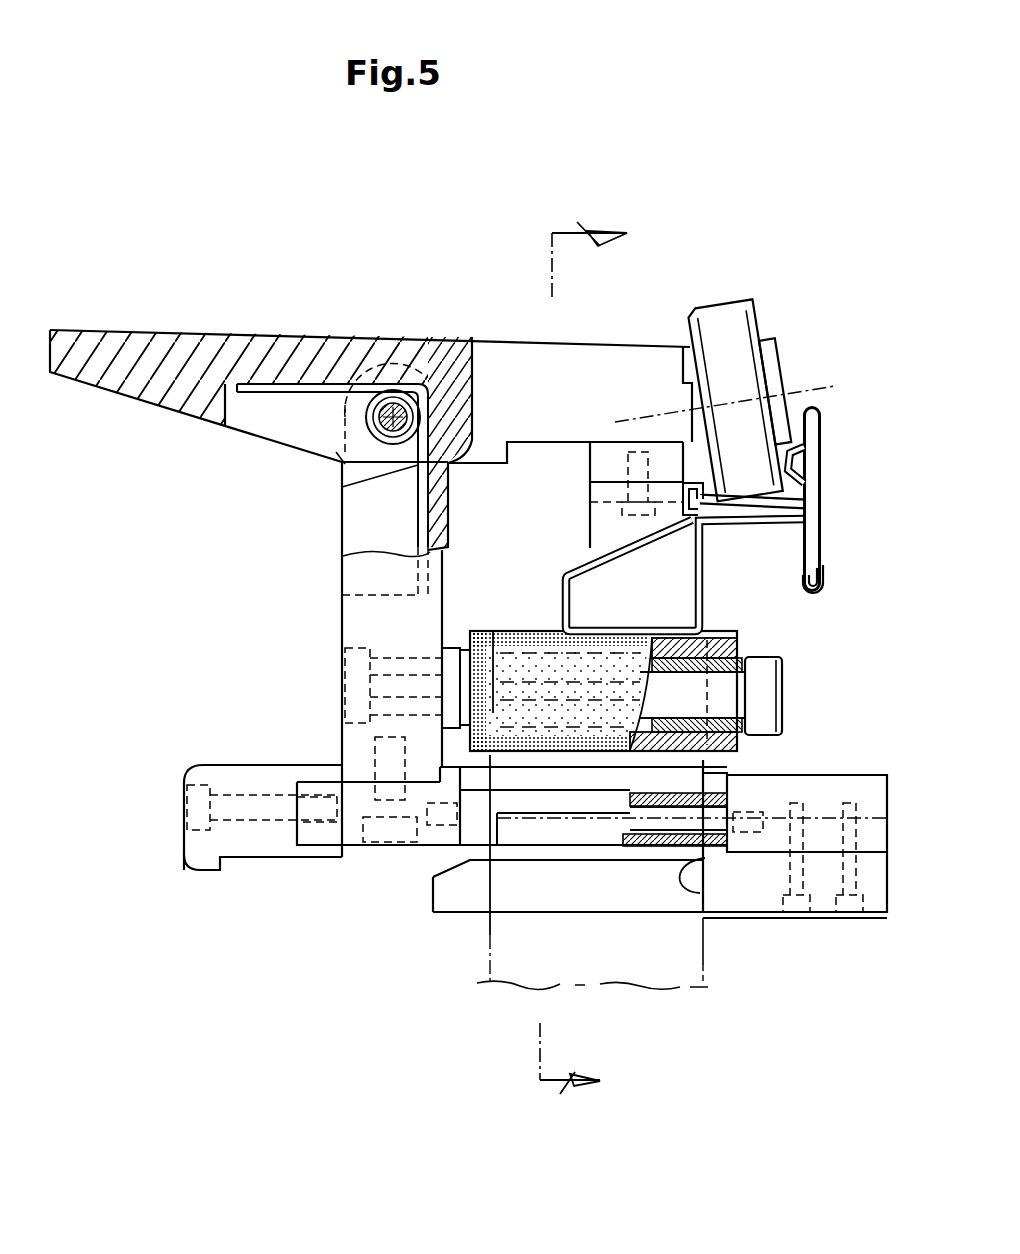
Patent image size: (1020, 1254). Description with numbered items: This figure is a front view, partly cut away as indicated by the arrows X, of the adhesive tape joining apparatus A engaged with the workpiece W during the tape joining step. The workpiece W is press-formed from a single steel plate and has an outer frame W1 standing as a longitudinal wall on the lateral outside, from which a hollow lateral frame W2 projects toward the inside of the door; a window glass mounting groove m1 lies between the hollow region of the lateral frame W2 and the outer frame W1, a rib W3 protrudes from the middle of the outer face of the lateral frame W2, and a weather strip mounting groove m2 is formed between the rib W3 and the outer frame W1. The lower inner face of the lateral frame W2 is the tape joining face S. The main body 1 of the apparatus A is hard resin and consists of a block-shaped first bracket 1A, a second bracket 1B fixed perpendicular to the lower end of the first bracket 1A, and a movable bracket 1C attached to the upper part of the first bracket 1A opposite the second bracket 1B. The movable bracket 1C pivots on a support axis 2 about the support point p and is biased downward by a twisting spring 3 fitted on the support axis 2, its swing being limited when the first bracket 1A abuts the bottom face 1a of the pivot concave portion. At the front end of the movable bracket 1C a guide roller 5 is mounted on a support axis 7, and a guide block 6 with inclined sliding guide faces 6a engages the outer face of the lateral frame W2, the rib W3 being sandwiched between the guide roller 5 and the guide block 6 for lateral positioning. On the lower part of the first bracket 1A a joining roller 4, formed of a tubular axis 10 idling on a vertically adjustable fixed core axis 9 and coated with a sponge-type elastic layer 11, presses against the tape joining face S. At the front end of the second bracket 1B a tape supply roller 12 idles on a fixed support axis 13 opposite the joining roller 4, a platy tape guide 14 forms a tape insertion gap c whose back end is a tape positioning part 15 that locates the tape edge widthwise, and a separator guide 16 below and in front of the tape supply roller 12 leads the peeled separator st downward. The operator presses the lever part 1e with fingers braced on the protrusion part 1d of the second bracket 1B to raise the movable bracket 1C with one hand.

The main body 1 is at (338, 618).
The first bracket 1A is at (342, 738).
The second bracket 1B is at (864, 773).
The movable bracket 1C is at (597, 345).
The bottom face 1a is at (472, 442).
The protrusion part 1d is at (185, 866).
The lever part 1e is at (92, 336).
The support axis 2 is at (423, 372).
The twisting spring 3 is at (272, 392).
The joining roller 4 is at (500, 630).
The guide roller 5 is at (726, 305).
The guide block 6 is at (590, 528).
The sliding guide faces 6a is at (640, 538).
The support axis 7 is at (788, 364).
The fixed core axis 9 is at (737, 697).
The tubular axis 10 is at (720, 752).
The elastic layer 11 is at (740, 650).
The tape supply roller 12 is at (535, 848).
The fixed support axis 13 is at (737, 812).
The tape guide 14 is at (433, 893).
The tape positioning part 15 is at (700, 893).
The separator guide 16 is at (460, 925).
The adhesive tape joining apparatus A is at (318, 290).
The workpiece W is at (880, 413).
The outer frame W1 is at (826, 538).
The lateral frame W2 is at (565, 596).
The rib W3 is at (688, 478).
The window glass mounting groove m1 is at (750, 526).
The weather strip mounting groove m2 is at (753, 492).
The support point p is at (332, 457).
The tape joining face S is at (620, 644).
The tape insertion gap c is at (612, 860).
The separator st is at (703, 965).
The section line X is at (566, 663).